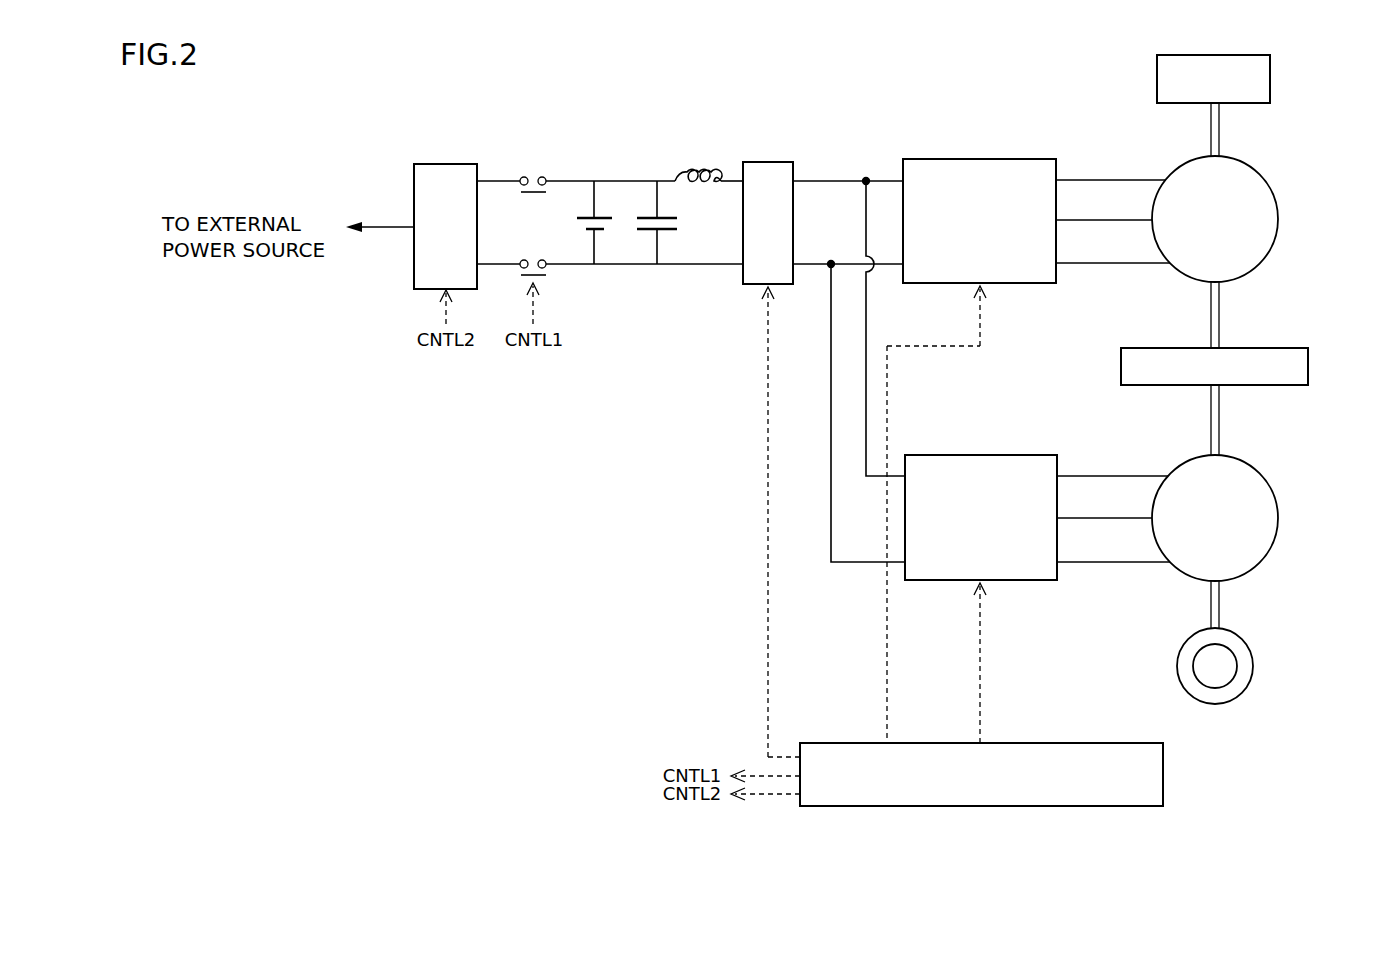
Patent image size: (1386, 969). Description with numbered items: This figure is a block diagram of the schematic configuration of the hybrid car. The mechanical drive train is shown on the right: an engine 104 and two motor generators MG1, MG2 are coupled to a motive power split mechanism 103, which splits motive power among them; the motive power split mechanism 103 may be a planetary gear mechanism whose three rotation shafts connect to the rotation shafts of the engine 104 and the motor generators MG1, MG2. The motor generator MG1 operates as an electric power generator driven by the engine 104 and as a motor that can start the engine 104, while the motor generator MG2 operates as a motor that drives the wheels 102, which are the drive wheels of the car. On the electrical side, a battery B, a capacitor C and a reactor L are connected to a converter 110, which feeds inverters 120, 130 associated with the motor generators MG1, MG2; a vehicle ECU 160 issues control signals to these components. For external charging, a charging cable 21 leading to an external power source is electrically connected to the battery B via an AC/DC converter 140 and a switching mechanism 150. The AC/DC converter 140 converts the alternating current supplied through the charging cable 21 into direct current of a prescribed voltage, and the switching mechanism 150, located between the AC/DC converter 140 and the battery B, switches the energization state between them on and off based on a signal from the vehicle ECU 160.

The charging cable 21 is at (382, 222).
The AC/DC converter 140 is at (444, 161).
The switching mechanism 150 is at (549, 160).
The converter 110 is at (766, 159).
The inverter 120 is at (979, 157).
The inverter 130 is at (979, 453).
The vehicle ECU 160 is at (1068, 808).
The engine 104 is at (1272, 80).
The motive power split mechanism 103 is at (1310, 365).
The wheels 102 is at (1256, 664).
The reactor L is at (693, 170).
The battery B is at (587, 232).
The capacitor C is at (664, 232).
The motor generator MG1 is at (1280, 222).
The motor generator MG2 is at (1280, 520).